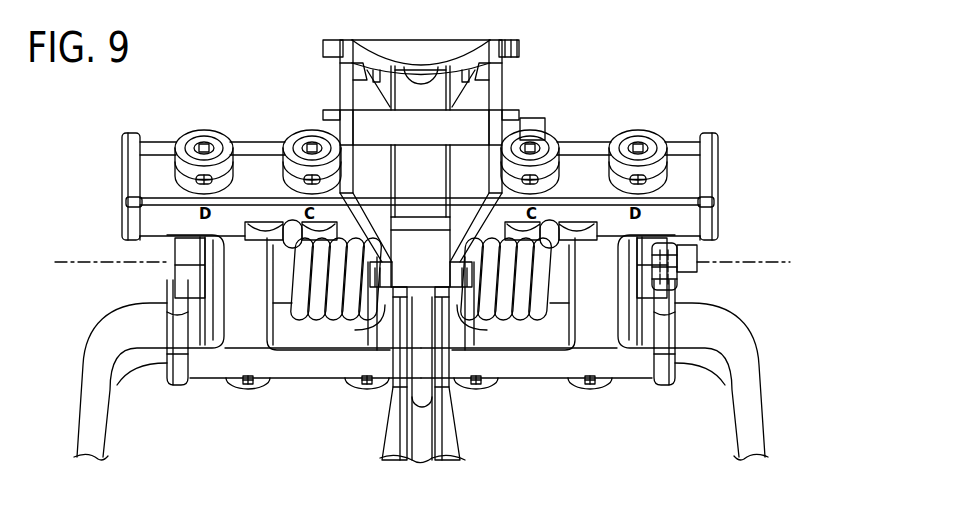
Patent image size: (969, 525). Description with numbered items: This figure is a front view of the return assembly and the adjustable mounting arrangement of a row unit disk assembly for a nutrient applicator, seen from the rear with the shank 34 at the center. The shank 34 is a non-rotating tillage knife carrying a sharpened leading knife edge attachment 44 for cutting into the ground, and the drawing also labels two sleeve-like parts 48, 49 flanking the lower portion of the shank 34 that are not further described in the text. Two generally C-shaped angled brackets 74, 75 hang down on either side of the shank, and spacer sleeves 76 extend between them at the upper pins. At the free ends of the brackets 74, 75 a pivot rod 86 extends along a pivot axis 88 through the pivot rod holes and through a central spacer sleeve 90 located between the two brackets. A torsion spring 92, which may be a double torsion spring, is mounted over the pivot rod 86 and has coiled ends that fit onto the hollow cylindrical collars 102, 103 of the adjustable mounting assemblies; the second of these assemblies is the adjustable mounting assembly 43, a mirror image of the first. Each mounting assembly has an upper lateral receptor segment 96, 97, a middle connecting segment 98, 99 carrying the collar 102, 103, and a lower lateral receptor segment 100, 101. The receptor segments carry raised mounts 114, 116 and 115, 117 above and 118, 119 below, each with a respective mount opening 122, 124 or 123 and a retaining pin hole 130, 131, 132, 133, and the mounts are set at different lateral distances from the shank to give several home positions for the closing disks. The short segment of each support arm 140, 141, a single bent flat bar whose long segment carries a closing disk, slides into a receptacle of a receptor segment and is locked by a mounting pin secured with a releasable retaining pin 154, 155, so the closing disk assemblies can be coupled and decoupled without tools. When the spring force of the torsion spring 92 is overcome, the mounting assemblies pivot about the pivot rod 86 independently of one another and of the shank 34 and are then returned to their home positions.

The shank 34 is at (420, 440).
The adjustable mounting assembly 43 is at (203, 372).
The knife edge attachment 44 is at (639, 372).
The right sleeve 48 is at (443, 448).
The left sleeve 49 is at (400, 448).
The angled bracket 74 is at (498, 88).
The angled bracket 75 is at (345, 92).
The spacer sleeves 76 is at (415, 128).
The pivot rod 86 is at (688, 255).
The pivot axis 88 is at (74, 264).
The central spacer sleeve 90 is at (425, 252).
The torsion spring 92 is at (337, 320).
The upper lateral receptor segment 96 is at (688, 143).
The upper lateral receptor segment 97 is at (157, 145).
The middle connecting segment 98 is at (607, 345).
The middle connecting segment 99 is at (258, 342).
The lower lateral receptor segment 100 is at (542, 365).
The lower lateral receptor segment 101 is at (300, 370).
The hollow cylindrical collar 102 is at (560, 273).
The hollow cylindrical collar 103 is at (283, 263).
The raised mount 114 is at (640, 130).
The raised mount 115 is at (218, 130).
The raised mount 116 is at (545, 135).
The raised mount 117 is at (310, 132).
The raised mount 118 is at (605, 385).
The raised mount 119 is at (240, 385).
The mount opening 122 is at (637, 145).
The mount opening 123 is at (205, 145).
The mount opening 124 is at (312, 145).
The retaining pin hole 130 is at (655, 180).
The retaining pin hole 131 is at (204, 180).
The retaining pin hole 132 is at (530, 180).
The retaining pin hole 133 is at (312, 180).
The support arm 140 is at (760, 437).
The support arm 141 is at (82, 437).
The retaining pin 154 is at (476, 386).
The retaining pin 155 is at (368, 386).